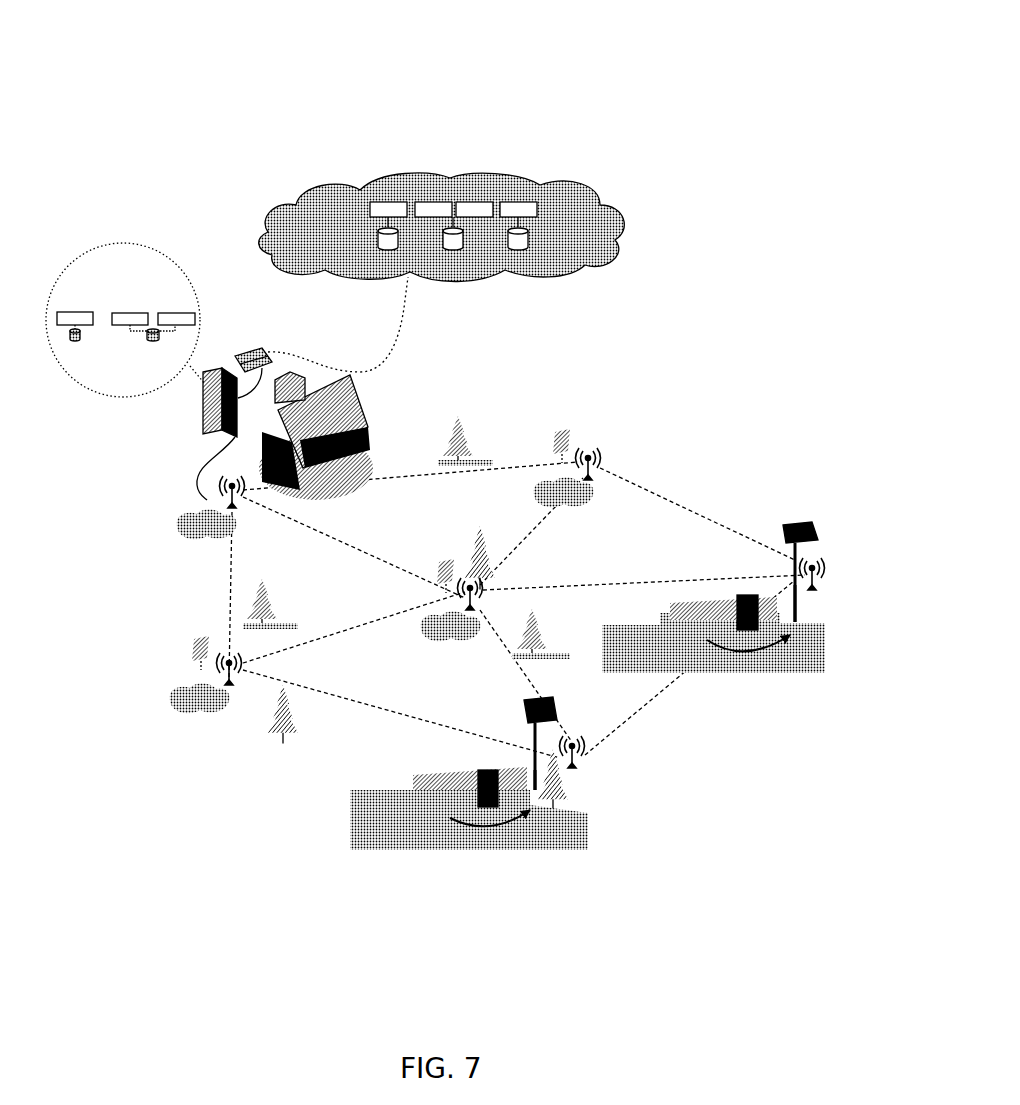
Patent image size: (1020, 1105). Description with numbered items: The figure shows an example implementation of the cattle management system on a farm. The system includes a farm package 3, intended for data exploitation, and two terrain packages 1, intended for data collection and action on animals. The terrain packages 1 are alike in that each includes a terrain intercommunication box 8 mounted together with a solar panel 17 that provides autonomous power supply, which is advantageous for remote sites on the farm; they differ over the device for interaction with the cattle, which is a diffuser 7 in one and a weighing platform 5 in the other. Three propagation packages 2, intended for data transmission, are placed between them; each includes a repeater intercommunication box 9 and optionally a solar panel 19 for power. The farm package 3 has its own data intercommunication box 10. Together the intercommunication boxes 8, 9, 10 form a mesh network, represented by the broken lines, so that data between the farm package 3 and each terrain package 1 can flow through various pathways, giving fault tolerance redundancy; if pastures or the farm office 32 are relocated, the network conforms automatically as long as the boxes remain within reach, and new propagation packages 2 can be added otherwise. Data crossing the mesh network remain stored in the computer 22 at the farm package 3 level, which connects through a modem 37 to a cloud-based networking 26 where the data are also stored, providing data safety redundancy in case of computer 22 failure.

The terrain package 1 is at (587, 772).
The propagation package 2 is at (606, 459).
The farm package 3 is at (138, 485).
The weighing platform 5 is at (730, 670).
The diffuser 7 is at (535, 740).
The terrain intercommunication box 8 is at (800, 600).
The repeater intercommunication box 9 is at (587, 500).
The data intercommunication box 10 is at (180, 540).
The solar panel 17 is at (806, 522).
The solar panel 19 is at (562, 425).
The computer 22 is at (205, 406).
The cloud-based networking 26 is at (453, 176).
The farm office 32 is at (365, 405).
The modem 37 is at (245, 352).